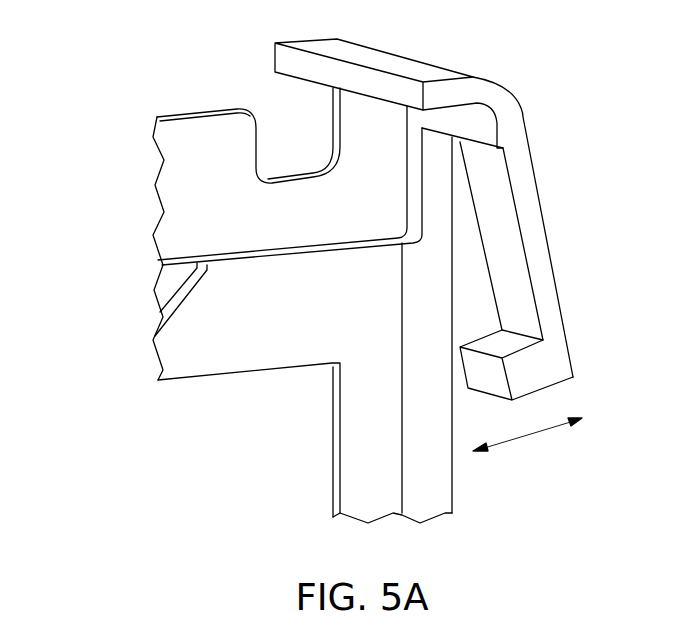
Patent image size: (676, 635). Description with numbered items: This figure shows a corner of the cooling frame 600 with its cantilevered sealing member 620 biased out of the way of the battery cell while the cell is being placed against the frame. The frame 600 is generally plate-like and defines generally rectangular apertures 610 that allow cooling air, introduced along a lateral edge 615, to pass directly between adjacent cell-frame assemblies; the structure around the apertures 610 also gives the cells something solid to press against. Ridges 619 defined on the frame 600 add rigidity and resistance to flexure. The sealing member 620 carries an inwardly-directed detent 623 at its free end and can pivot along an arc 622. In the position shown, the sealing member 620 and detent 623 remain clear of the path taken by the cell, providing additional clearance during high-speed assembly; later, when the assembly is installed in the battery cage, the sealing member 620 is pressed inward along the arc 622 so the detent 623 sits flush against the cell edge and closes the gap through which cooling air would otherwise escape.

The cooling frame 600 is at (128, 157).
The aperture 610 is at (248, 434).
The lateral edge 615 is at (452, 502).
The ridge 619 is at (215, 258).
The sealing member 620 is at (538, 245).
The arc 622 is at (530, 437).
The detent 623 is at (553, 367).